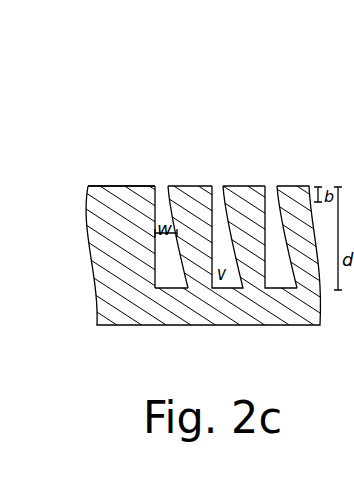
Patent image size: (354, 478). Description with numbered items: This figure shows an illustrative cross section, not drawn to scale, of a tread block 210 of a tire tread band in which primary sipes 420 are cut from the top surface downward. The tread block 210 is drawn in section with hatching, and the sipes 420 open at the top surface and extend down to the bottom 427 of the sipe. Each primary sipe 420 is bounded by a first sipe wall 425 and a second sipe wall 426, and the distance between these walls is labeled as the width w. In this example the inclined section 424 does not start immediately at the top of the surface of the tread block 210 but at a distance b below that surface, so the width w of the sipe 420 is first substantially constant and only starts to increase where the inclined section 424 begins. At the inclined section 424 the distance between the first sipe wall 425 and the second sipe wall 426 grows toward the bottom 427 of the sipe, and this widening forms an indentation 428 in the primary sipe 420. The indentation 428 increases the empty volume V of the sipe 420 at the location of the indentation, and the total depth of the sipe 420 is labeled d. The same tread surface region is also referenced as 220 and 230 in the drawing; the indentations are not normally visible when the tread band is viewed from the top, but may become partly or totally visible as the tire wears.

The tread block 210 is at (221, 94).
The second electrode layer 220 is at (221, 94).
The third electrode layer 230 is at (266, 150).
The primary sipe 420 is at (160, 180).
The inclined section 424 is at (167, 268).
The first sipe wall 425 is at (151, 238).
The second sipe wall 426 is at (177, 232).
The bottom of the sipe 427 is at (176, 287).
The indentation 428 is at (286, 272).